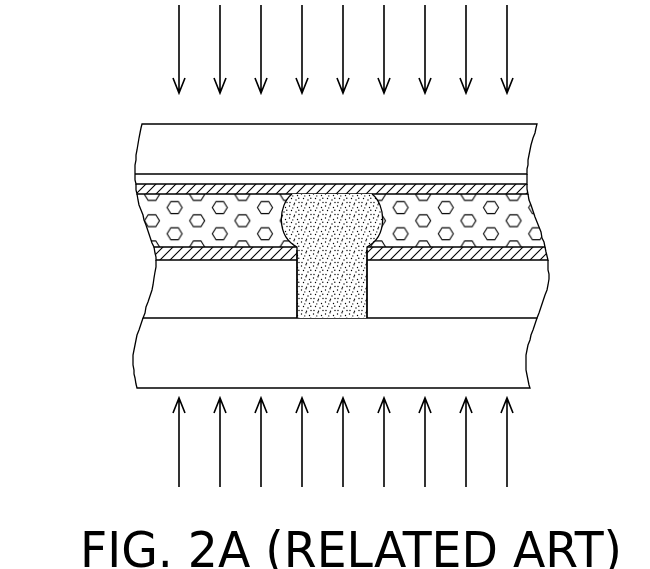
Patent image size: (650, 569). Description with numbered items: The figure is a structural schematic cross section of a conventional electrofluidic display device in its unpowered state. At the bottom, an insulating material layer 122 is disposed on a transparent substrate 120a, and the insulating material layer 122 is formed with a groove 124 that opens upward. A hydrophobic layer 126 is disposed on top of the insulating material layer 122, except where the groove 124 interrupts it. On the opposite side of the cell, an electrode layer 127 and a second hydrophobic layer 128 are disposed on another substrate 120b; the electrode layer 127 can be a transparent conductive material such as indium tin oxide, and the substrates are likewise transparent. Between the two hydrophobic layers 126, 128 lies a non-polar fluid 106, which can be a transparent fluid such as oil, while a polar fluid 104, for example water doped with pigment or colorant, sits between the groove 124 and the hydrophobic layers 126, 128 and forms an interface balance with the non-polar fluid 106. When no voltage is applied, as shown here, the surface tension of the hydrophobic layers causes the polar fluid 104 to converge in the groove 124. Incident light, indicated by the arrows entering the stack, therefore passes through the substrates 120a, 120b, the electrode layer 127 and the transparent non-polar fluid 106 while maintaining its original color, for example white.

The substrate 120b is at (148, 142).
The electrode layer 127 is at (148, 178).
The hydrophobic layer 128 is at (137, 188).
The non-polar fluid 106 is at (150, 228).
The hydrophobic layer 126 is at (153, 255).
The insulating material layer 122 is at (158, 284).
The groove 124 is at (300, 290).
The transparent substrate 120a is at (148, 368).
The polar fluid 104 is at (344, 210).